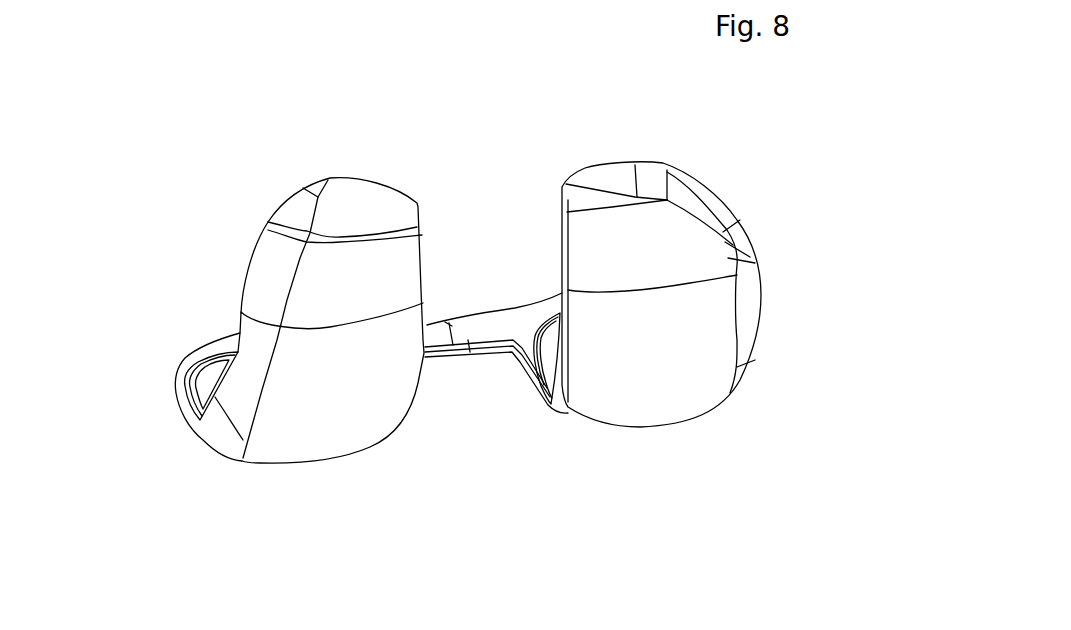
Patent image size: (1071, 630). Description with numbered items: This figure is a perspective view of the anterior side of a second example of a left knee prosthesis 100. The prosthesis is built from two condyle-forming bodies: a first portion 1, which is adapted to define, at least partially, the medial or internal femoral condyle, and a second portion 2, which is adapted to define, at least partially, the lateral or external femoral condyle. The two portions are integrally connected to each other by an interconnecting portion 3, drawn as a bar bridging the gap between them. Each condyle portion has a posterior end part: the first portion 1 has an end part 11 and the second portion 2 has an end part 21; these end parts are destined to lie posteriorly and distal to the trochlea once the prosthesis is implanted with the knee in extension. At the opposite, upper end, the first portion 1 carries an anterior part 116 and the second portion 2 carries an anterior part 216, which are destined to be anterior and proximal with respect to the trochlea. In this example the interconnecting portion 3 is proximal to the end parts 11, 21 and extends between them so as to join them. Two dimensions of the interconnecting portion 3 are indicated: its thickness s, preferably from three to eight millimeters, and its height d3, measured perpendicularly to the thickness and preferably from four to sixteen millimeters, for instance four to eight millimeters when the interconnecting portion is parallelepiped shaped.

The left knee prosthesis 100 is at (190, 145).
The first portion 1 is at (299, 405).
The second portion 2 is at (650, 371).
The interconnecting portion 3 is at (445, 366).
The end part of first portion 11 is at (200, 372).
The end part of second portion 21 is at (550, 337).
The anterior part of first portion 116 is at (352, 210).
The anterior part of second portion 216 is at (587, 193).
The height of interconnecting portion d3 is at (449, 323).
The thickness of interconnecting portion s is at (468, 343).